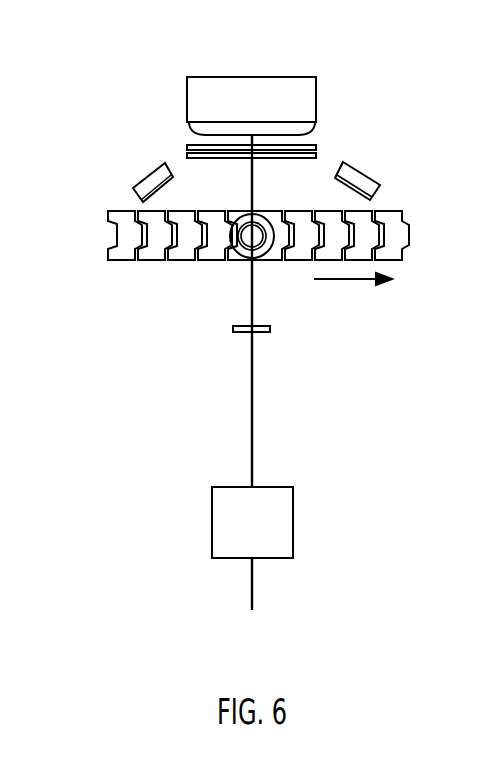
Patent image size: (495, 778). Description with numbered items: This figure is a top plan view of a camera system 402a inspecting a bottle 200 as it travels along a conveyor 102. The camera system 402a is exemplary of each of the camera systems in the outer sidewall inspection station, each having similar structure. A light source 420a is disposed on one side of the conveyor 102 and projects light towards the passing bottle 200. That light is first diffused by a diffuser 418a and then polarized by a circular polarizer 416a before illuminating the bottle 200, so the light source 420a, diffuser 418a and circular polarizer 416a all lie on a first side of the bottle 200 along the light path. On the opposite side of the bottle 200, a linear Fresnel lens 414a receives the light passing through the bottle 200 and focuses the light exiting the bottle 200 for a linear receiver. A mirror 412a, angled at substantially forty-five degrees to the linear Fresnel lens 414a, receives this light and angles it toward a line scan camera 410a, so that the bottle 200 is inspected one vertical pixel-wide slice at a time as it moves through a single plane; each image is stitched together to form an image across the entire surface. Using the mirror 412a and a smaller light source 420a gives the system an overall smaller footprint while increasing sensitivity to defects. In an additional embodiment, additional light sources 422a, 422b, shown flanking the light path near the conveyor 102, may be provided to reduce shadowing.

The camera system 402a is at (124, 426).
The light source 420a is at (253, 77).
The diffuser 418a is at (317, 146).
The circular polarizer 416a is at (317, 157).
The additional light source 422a is at (133, 189).
The additional light source 422b is at (380, 188).
The mirror 412a is at (272, 438).
The conveyor 102 is at (393, 256).
The bottle 200 is at (258, 236).
The linear Fresnel lens 414a is at (233, 327).
The line scan camera 410a is at (293, 523).